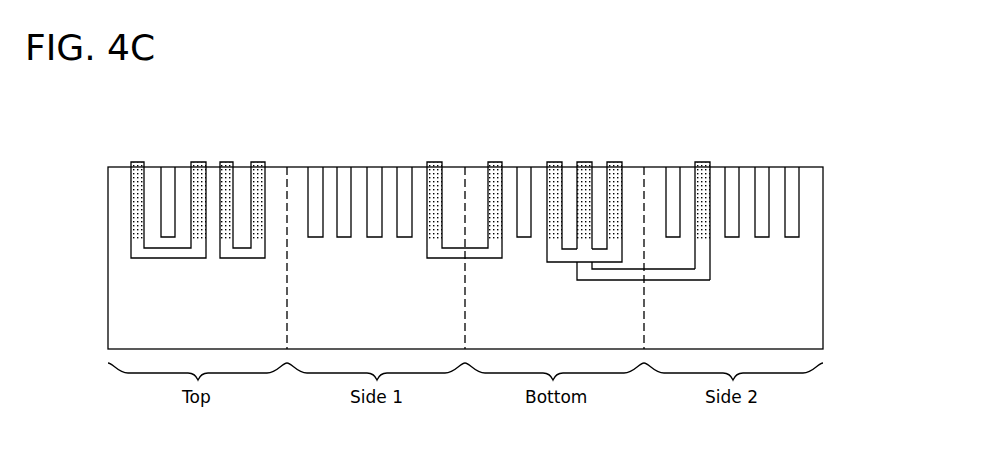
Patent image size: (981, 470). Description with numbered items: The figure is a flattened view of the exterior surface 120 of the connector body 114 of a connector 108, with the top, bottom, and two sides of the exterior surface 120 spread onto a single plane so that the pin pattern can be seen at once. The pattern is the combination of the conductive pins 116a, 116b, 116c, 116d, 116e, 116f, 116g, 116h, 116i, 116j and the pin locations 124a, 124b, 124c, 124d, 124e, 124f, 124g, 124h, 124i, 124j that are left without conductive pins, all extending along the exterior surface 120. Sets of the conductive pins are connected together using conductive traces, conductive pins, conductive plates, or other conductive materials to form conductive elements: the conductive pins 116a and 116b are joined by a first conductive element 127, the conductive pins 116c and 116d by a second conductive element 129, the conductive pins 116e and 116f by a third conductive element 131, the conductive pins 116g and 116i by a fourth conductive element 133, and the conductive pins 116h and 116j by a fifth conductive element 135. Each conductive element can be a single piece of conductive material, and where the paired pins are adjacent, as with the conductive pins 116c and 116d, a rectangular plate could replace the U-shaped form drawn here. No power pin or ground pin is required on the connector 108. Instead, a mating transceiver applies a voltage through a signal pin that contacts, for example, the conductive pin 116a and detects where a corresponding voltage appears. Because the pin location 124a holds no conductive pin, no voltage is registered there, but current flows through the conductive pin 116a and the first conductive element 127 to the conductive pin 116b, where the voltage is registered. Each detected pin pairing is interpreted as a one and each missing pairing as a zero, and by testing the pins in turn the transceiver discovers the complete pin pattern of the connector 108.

The connector 108 is at (832, 184).
The connector body 114 is at (113, 250).
The conductive pin 116a is at (137, 162).
The conductive pin 116b is at (198, 162).
The conductive pin 116c is at (227, 162).
The conductive pin 116d is at (258, 162).
The conductive pin 116e is at (434, 162).
The conductive pin 116f is at (495, 162).
The conductive pin 116g is at (554, 162).
The conductive pin 116h is at (584, 162).
The conductive pin 116i is at (614, 162).
The conductive pin 116j is at (702, 162).
The exterior surface 120 is at (395, 343).
The pin location 124a is at (167, 238).
The pin location 124b is at (315, 239).
The pin location 124c is at (344, 167).
The pin location 124d is at (374, 167).
The pin location 124e is at (403, 239).
The pin location 124f is at (521, 239).
The pin location 124g is at (672, 239).
The pin location 124h is at (732, 167).
The pin location 124i is at (762, 167).
The pin location 124j is at (792, 167).
The conductive interconnect 127 is at (143, 256).
The conductive interconnect 129 is at (248, 257).
The conductive interconnect 131 is at (455, 257).
The conductive interconnect 133 is at (555, 258).
The conductive interconnect 135 is at (708, 267).